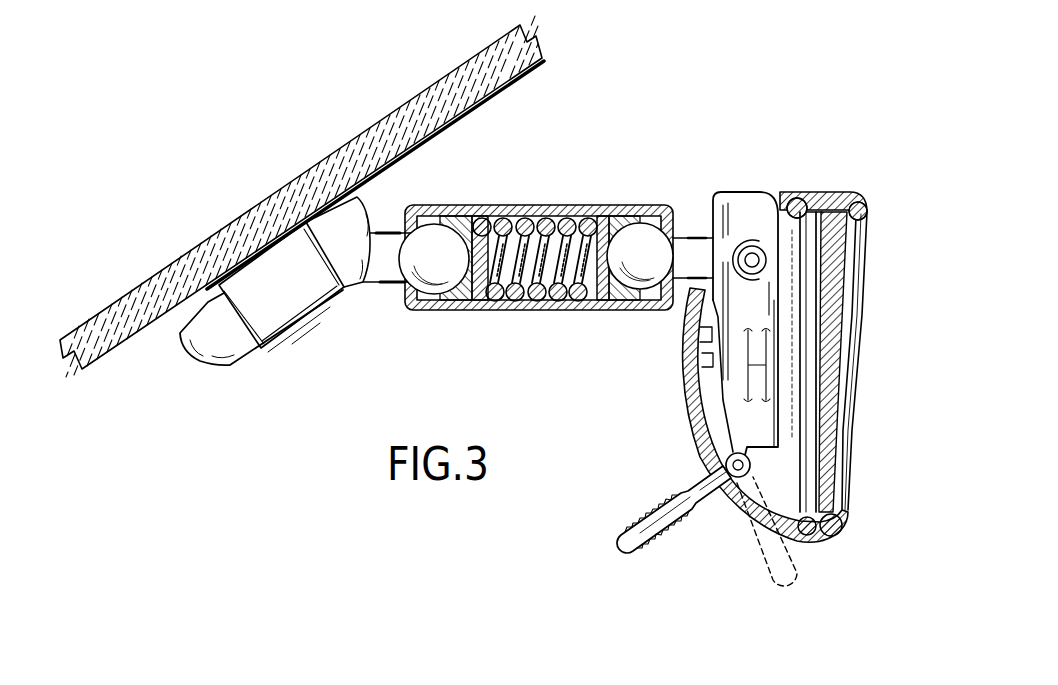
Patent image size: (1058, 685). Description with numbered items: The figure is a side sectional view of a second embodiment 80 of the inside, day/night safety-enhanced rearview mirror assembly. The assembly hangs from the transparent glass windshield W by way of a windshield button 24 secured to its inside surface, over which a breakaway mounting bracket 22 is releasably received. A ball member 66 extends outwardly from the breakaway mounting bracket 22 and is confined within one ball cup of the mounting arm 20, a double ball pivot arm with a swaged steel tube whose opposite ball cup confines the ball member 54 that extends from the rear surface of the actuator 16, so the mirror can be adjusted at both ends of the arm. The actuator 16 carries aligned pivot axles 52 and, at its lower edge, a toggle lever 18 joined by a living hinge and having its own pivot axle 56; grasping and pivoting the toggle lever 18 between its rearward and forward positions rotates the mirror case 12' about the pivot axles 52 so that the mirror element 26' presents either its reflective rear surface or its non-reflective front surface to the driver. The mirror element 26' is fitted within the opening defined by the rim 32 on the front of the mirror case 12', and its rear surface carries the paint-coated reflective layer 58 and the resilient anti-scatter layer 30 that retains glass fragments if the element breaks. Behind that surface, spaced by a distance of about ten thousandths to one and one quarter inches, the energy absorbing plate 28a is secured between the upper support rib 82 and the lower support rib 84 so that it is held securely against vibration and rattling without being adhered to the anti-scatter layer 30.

The windshield W is at (370, 137).
The windshield button 24 is at (323, 202).
The breakaway mounting bracket 22 is at (303, 330).
The mounting arm 20 is at (525, 195).
The ball member 66 is at (399, 288).
The ball member 54 is at (667, 243).
The second embodiment of rearview mirror assembly 80 is at (703, 97).
The actuator 16 is at (741, 192).
The upper support rib 82 is at (795, 193).
The lower support rib 84 is at (807, 193).
The mirror case 12' is at (863, 309).
The rim 32 is at (867, 213).
The pivot axles 52 is at (762, 250).
The mirror element 26' is at (868, 362).
The reflective layer 58 is at (827, 327).
The energy absorbing plate 28a is at (787, 293).
The anti-scatter layer 30 is at (813, 380).
The pivot axle 56 is at (725, 457).
The toggle lever 18 is at (630, 538).